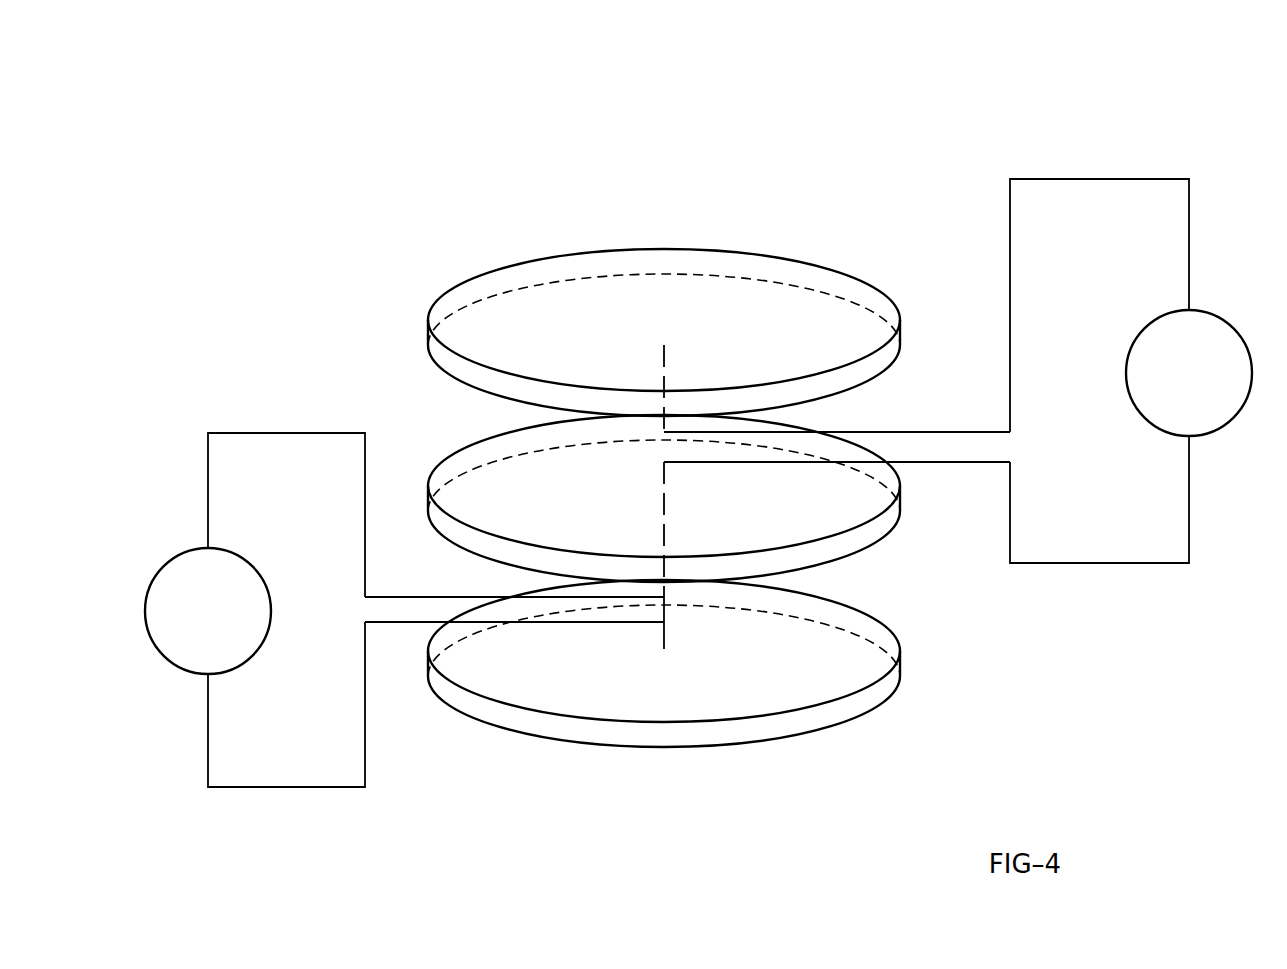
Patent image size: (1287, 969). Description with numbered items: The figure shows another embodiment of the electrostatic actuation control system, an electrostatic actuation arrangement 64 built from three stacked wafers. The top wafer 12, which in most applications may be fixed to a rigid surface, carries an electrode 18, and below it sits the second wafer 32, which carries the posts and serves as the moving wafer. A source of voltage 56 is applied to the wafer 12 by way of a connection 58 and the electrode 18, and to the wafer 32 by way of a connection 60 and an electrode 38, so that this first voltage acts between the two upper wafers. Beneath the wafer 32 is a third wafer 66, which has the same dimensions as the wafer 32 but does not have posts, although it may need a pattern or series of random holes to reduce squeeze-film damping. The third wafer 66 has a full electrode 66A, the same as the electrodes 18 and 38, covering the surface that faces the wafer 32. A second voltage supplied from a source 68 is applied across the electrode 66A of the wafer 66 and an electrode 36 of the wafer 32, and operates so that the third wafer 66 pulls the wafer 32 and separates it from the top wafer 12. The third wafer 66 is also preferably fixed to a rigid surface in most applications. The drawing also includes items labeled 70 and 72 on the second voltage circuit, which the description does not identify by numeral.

The electrostatic actuation arrangement 64 is at (768, 158).
The wafer 12 is at (707, 330).
The electrode 18 is at (885, 372).
The wafer 32 is at (711, 506).
The electrode 38 is at (787, 528).
The electrode 36 is at (687, 582).
The third wafer 66 is at (731, 690).
The electrode 66A is at (840, 736).
The connection 58 is at (1099, 335).
The connection 60 is at (1067, 563).
The source of voltage 56 is at (1236, 332).
The second drive circuit block 70 is at (286, 609).
The second circuit connection 72 is at (297, 788).
The source of voltage 68 is at (157, 578).